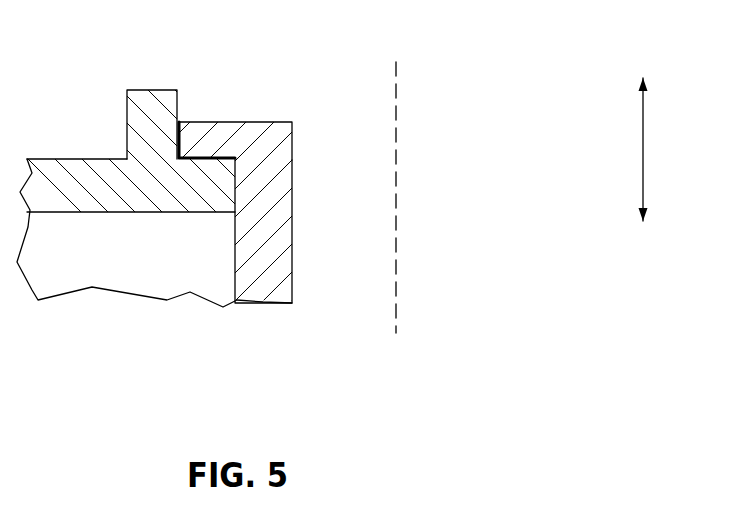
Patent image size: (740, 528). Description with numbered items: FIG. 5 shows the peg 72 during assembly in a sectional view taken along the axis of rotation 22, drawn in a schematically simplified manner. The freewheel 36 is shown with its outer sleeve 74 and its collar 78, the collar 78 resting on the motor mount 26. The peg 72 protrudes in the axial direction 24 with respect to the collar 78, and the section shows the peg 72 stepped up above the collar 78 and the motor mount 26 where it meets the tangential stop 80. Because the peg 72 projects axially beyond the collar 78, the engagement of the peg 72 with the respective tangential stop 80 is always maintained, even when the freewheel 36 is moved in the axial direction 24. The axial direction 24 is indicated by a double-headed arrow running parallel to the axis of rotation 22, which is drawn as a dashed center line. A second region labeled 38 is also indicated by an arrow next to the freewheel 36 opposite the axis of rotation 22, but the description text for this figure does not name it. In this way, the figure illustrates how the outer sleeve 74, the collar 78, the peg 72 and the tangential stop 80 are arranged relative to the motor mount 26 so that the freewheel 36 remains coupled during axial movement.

The axis of rotation 22 is at (397, 92).
The axial direction 24 is at (647, 143).
The motor mount 26 is at (72, 195).
The freewheel 36 is at (334, 100).
The second side 38 is at (319, 196).
The peg 72 is at (147, 125).
The outer sleeve 74 is at (272, 283).
The collar 78 is at (207, 135).
The tangential stop 80 is at (180, 121).